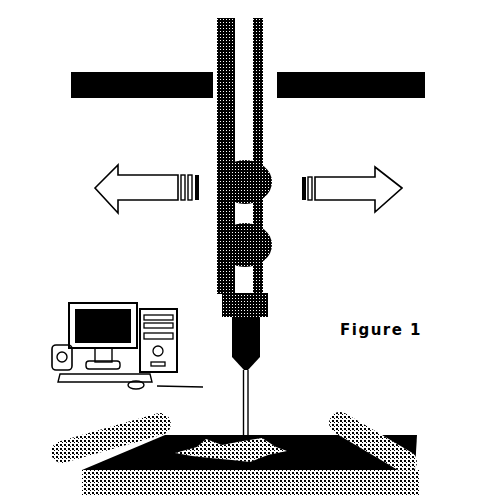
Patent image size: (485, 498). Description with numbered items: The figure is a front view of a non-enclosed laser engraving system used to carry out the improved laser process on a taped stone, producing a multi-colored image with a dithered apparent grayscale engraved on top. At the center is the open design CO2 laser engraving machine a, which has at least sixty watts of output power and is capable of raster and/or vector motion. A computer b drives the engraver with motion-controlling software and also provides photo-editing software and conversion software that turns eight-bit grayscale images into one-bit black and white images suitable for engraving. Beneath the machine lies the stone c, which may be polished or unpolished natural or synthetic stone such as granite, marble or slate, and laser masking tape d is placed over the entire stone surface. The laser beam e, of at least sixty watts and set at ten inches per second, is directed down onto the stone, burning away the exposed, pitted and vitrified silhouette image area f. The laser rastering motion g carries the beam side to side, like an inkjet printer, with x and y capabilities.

The open design CO2 laser engraving machine a is at (281, 270).
The computer b is at (91, 300).
The stone c is at (251, 444).
The laser masking tape d is at (147, 450).
The laser beam e is at (253, 427).
The exposed, pitted and vitrified silhouette image area f is at (210, 442).
The laser rastering motion g is at (151, 173).